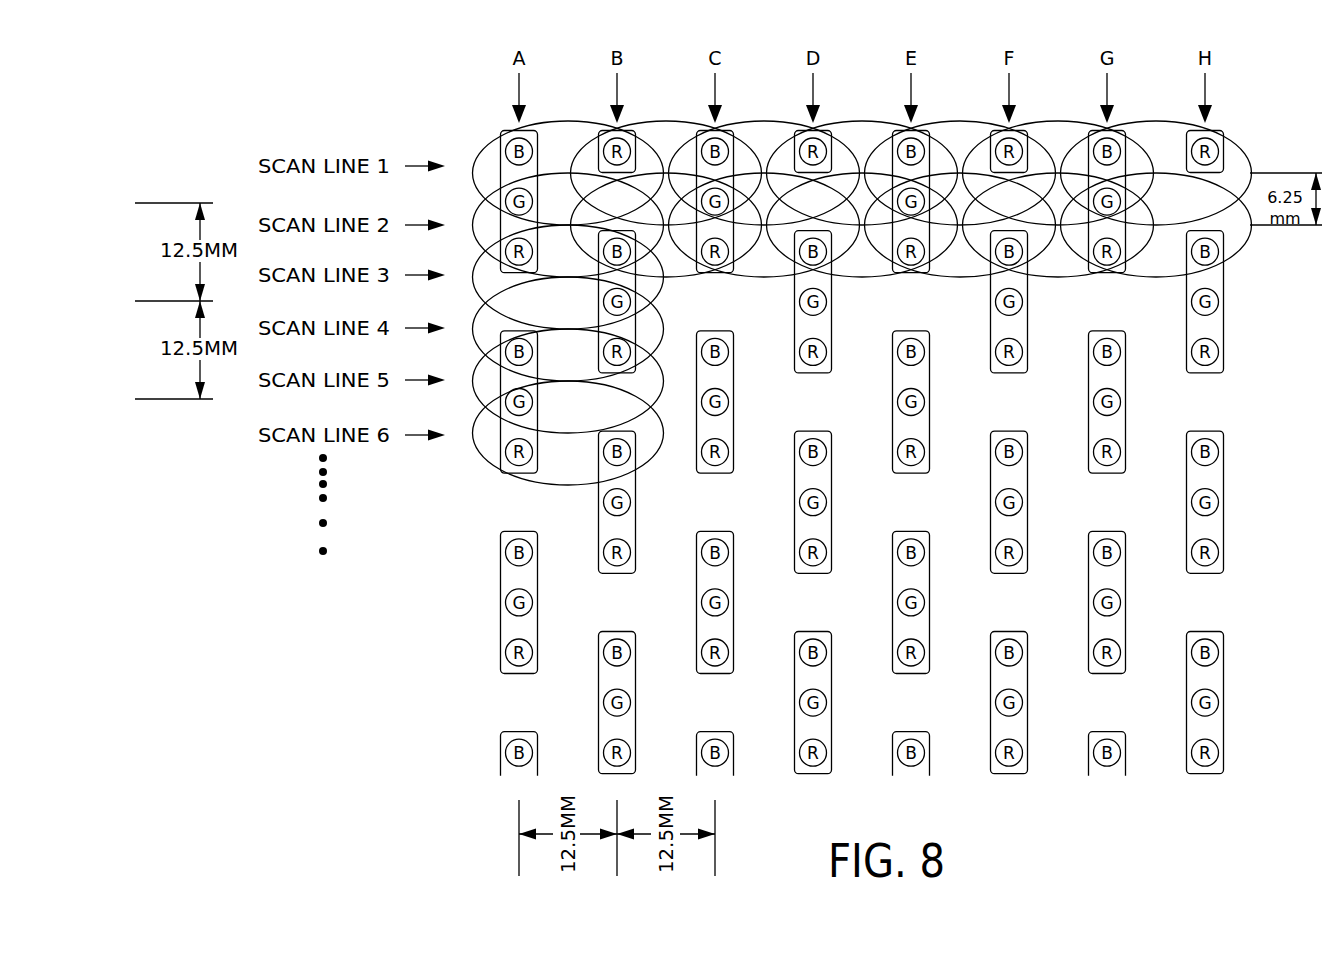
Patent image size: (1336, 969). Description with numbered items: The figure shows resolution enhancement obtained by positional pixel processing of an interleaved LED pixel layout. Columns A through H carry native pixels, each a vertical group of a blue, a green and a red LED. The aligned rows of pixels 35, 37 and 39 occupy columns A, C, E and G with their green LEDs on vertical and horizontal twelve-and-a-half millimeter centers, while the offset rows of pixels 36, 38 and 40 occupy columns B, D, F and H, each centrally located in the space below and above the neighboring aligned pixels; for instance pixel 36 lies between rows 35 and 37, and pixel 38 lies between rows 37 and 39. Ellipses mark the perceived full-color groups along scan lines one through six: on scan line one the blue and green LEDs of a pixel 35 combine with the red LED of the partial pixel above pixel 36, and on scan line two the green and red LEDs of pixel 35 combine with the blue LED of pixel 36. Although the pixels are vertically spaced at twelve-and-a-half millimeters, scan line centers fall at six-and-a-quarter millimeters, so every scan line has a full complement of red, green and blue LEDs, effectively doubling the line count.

The pixel row (scan line) of pixels 35A–35G 35 is at (478, 202).
The pixel row (scan line) of pixels 36B–36H 36 is at (574, 302).
The pixel row (scan line) of pixels 37A–37G 37 is at (478, 402).
The pixel row (scan line) of pixels 38B–38H 38 is at (574, 501).
The pixel row (scan line) of pixels 39A–39G 39 is at (478, 600).
The pixel row (scan line) of pixels 40B–40H 40 is at (574, 701).